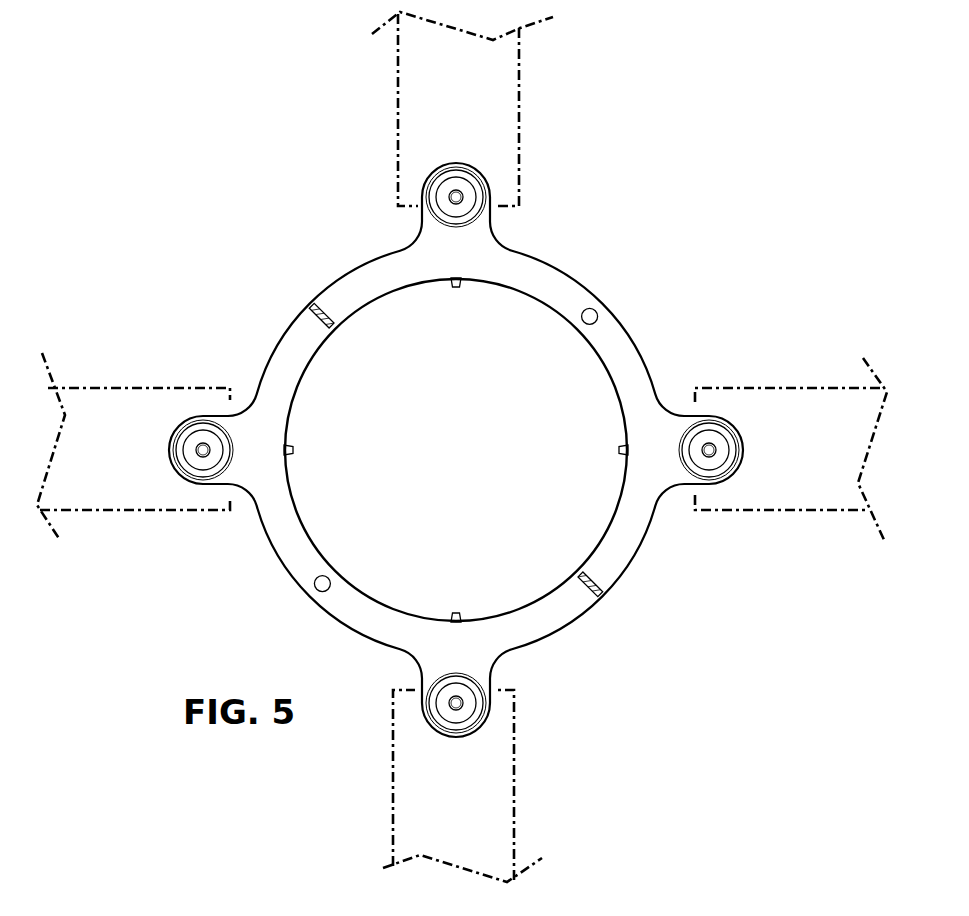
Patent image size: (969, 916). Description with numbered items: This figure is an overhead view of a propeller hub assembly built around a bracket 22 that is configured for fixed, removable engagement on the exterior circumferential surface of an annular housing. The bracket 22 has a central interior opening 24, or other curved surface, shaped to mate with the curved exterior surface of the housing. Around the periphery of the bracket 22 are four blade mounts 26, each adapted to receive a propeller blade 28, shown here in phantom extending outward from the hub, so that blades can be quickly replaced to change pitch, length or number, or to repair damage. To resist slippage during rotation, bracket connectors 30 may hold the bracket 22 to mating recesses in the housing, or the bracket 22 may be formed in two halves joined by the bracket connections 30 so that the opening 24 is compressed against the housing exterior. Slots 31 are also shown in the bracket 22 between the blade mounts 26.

The bracket 22 is at (623, 370).
The interior opening 24 is at (540, 300).
The blade mount 26 is at (427, 228).
The propeller blade 28 is at (493, 123).
The bracket connector 30 is at (455, 612).
The slot 31 is at (307, 300).